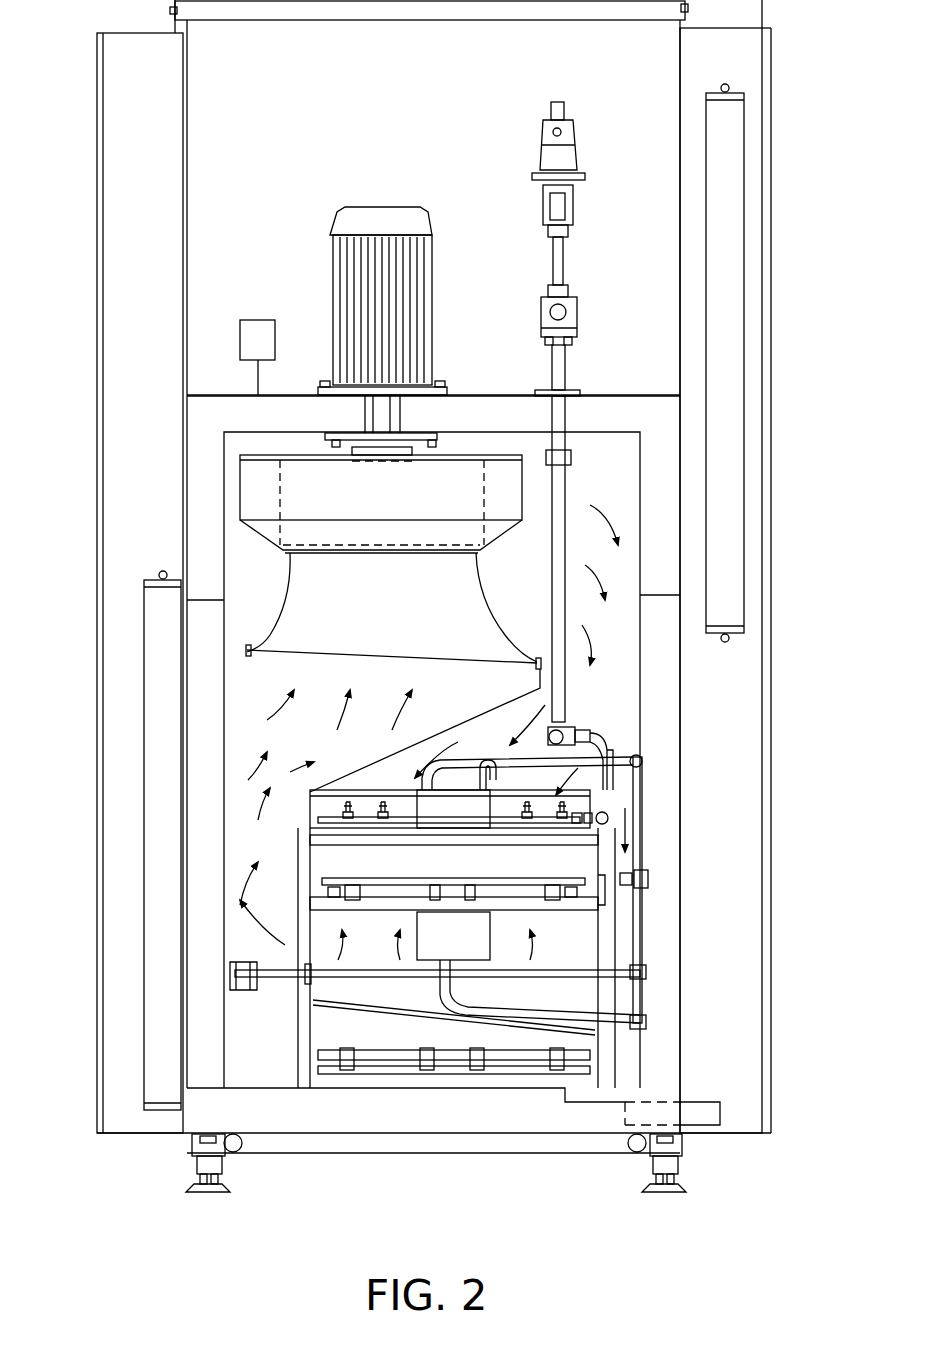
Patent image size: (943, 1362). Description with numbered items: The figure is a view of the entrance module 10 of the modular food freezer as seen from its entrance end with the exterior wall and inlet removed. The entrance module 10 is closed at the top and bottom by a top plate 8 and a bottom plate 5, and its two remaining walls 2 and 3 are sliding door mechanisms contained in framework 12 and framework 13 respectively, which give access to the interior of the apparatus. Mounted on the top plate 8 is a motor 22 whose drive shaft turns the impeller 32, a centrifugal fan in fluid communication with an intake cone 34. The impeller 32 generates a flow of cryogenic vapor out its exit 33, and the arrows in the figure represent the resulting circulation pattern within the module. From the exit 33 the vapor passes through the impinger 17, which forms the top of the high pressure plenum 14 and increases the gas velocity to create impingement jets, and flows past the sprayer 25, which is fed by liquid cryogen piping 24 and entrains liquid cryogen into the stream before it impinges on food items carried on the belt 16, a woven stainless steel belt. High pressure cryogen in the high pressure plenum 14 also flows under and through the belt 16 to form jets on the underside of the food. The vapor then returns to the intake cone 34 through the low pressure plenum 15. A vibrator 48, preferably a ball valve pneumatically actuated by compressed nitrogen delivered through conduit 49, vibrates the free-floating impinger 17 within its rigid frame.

The wall 2 is at (745, 520).
The wall 3 is at (145, 1005).
The bottom plate 5 is at (503, 1155).
The top plate 8 is at (497, 393).
The entrance module 10 is at (782, 730).
The framework 12 is at (762, 52).
The framework 13 is at (110, 90).
The high pressure plenum 14 is at (403, 1000).
The low pressure plenum 15 is at (313, 737).
The belt 16 is at (320, 887).
The impinger 17 is at (310, 793).
The motor 22 is at (330, 228).
The liquid cryogen piping 24 is at (565, 686).
The sprayer 25 is at (538, 820).
The impeller 32 is at (240, 495).
The exit 33 is at (264, 532).
The intake cone 34 is at (298, 652).
The vibrator 48 is at (497, 792).
The conduit 49 is at (642, 962).